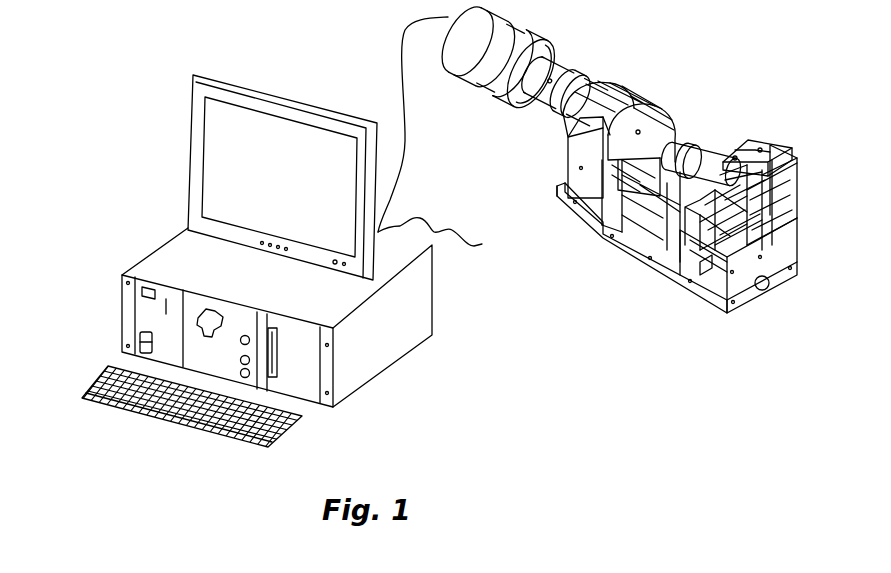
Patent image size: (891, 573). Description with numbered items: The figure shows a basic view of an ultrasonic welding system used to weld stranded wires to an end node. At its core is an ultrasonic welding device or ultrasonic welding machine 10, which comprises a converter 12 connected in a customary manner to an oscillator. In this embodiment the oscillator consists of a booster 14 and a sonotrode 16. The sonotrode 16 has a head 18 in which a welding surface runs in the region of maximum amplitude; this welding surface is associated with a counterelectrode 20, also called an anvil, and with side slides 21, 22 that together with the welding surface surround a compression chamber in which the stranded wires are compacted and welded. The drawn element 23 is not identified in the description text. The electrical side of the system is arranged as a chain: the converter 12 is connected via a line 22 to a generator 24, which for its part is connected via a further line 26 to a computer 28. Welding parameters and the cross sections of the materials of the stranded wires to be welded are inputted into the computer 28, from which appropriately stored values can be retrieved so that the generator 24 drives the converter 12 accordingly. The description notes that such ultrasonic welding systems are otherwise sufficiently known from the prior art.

The ultrasonic welding machine 10 is at (609, 70).
The converter 12 is at (503, 33).
The booster 14 is at (652, 98).
The sonotrode 16 is at (688, 157).
The head 18 is at (770, 208).
The counterelectrode 20 is at (773, 238).
The side slide 21 is at (669, 232).
The line 22 is at (407, 143).
The sample holder 23 is at (770, 197).
The generator 24 is at (147, 313).
The line 26 is at (440, 236).
The computer 28 is at (303, 385).